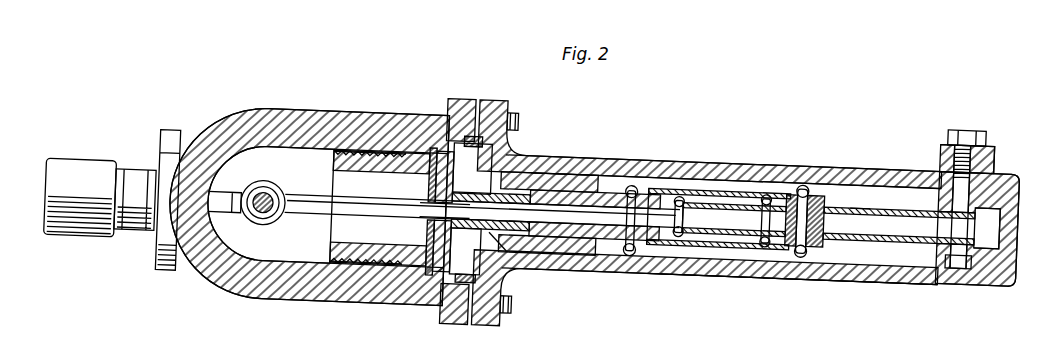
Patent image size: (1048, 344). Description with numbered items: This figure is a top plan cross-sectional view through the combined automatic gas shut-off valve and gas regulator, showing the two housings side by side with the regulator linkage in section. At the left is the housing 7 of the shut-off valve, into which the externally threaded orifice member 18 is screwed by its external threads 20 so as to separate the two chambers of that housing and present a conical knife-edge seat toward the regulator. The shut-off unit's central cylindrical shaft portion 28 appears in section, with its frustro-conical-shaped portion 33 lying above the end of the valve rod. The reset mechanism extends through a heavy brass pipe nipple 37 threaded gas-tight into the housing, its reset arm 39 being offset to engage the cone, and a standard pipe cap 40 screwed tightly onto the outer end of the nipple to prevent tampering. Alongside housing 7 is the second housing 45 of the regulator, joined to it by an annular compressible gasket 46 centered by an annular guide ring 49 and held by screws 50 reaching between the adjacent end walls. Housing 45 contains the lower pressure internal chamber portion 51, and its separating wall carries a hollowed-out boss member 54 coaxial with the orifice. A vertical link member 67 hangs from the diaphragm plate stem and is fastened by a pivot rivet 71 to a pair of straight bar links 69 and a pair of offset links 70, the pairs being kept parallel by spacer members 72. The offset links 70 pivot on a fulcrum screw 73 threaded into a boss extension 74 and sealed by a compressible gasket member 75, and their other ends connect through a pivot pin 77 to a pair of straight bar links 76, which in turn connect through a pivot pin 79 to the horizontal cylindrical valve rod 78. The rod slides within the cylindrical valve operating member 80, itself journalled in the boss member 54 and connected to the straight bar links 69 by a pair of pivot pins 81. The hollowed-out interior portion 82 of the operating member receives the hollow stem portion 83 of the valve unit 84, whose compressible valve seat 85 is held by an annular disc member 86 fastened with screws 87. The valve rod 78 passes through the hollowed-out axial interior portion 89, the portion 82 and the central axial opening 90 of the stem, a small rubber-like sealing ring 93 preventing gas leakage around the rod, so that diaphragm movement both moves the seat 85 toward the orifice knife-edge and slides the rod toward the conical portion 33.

The housing 7 is at (218, 300).
The orifice member 18 is at (352, 170).
The external threads 20 is at (340, 262).
The central cylindrical shaft portion 28 is at (263, 214).
The frustro-conical-shaped portion 33 is at (270, 186).
The pipe nipple 37 is at (137, 237).
The reset arm 39 is at (228, 195).
The pipe cap 40 is at (75, 244).
The housing 45 is at (688, 260).
The gasket 46 is at (456, 318).
The guide ring 49 is at (412, 300).
The screws 50 is at (516, 292).
The internal chamber portion 51 is at (906, 164).
The boss member 54 is at (556, 160).
The vertical link member 67 is at (852, 187).
The straight bar links 69 is at (714, 232).
The offset links 70 is at (893, 220).
The pivot rivet 71 is at (805, 170).
The spacer members 72 is at (826, 226).
The fulcrum screw 73 is at (992, 165).
The boss extension 74 is at (940, 135).
The gasket member 75 is at (985, 112).
The straight bar links 76 is at (740, 220).
The pivot pin 77 is at (768, 180).
The valve rod 78 is at (597, 190).
The pivot pin 79 is at (682, 186).
The valve operating member 80 is at (612, 228).
The pivot pins 81 is at (634, 243).
The hollowed-out interior portion 82 is at (490, 186).
The hollow stem portion 83 is at (467, 209).
The valve unit 84 is at (473, 168).
The compressible valve seat 85 is at (428, 186).
The annular disc member 86 is at (428, 146).
The screws 87 is at (372, 302).
The hollowed-out axial interior portion 89 is at (578, 245).
The central axial opening 90 is at (430, 225).
The sealing ring 93 is at (505, 245).